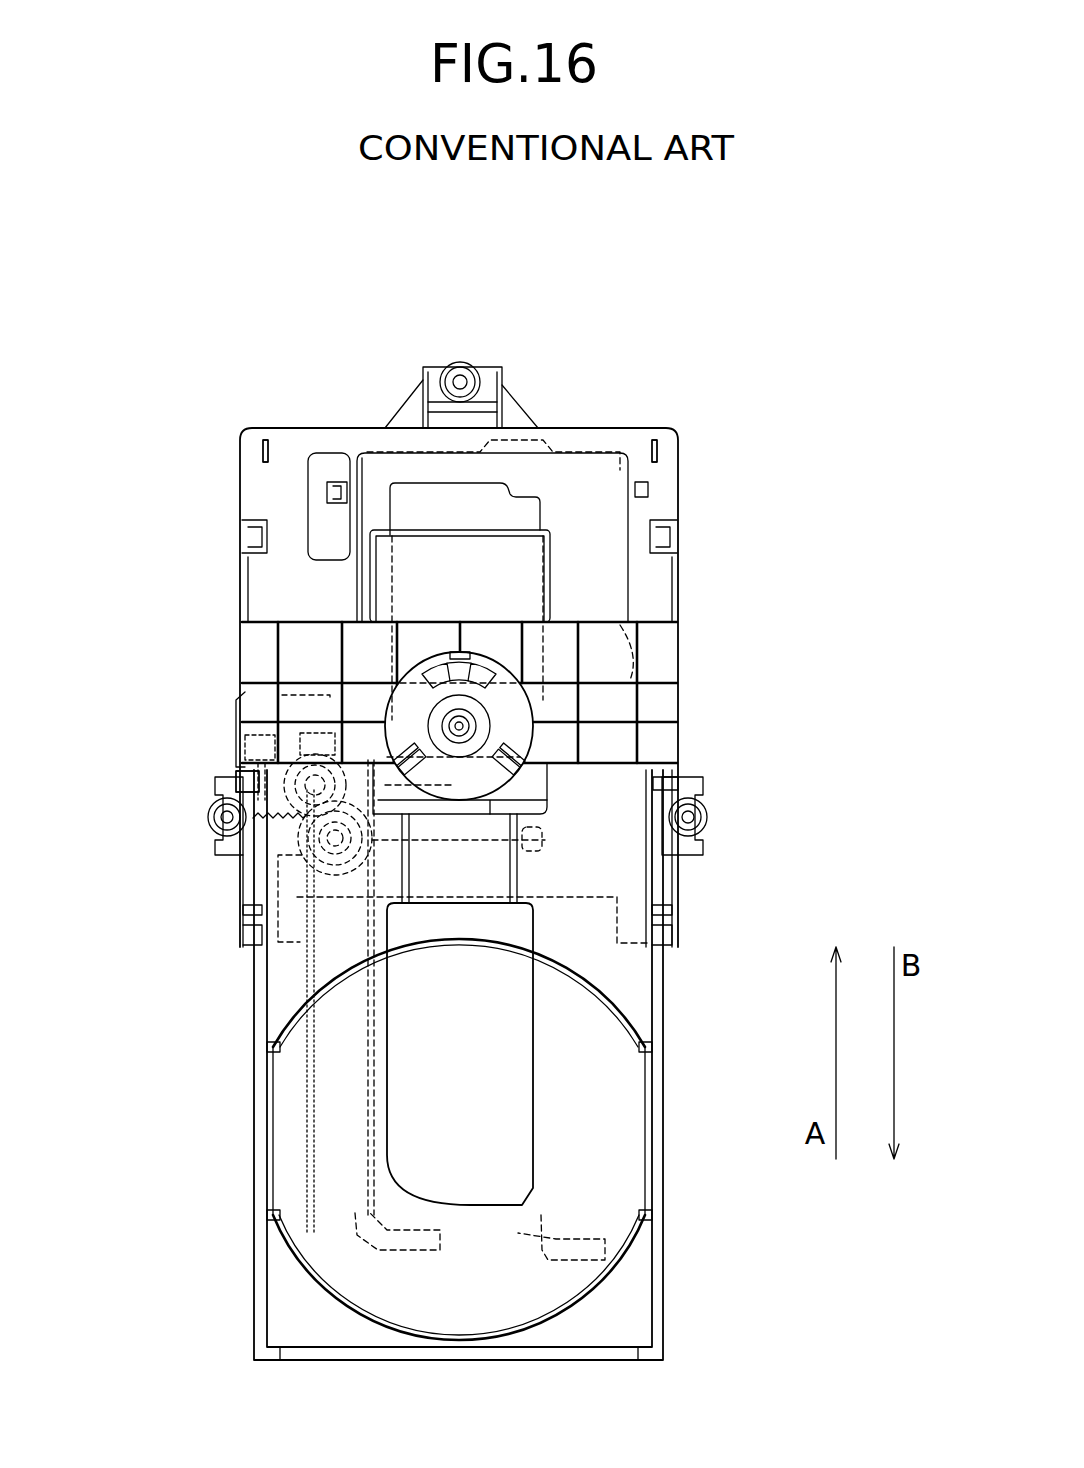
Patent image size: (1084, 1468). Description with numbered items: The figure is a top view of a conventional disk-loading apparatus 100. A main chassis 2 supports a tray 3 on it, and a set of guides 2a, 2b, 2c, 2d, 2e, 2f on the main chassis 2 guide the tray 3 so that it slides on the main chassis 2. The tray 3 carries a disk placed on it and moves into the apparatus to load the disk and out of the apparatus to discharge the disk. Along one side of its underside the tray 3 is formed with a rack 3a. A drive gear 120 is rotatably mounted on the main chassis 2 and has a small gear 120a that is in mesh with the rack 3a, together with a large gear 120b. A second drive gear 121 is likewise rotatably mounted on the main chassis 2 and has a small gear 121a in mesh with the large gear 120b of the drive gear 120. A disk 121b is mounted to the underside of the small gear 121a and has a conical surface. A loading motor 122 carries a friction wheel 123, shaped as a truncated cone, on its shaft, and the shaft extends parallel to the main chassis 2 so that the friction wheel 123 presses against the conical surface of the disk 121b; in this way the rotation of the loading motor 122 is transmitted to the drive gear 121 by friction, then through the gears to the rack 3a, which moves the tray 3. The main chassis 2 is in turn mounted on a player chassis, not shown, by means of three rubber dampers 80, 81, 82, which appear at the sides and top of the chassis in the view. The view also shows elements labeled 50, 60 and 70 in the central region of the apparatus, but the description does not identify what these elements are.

The disk-loading apparatus 100 is at (622, 370).
The main chassis 2 is at (670, 470).
The guide 2a is at (249, 949).
The guide 2b is at (232, 778).
The guide 2c is at (262, 453).
The guide 2d is at (675, 925).
The guide 2e is at (680, 777).
The guide 2f is at (657, 443).
The tray 3 is at (632, 986).
The rack 3a is at (307, 1135).
The traverse unit 50 is at (463, 833).
The spindle motor 60 is at (440, 732).
The optical pickup unit 70 is at (543, 467).
The rubber damper 80 is at (709, 816).
The rubber damper 81 is at (458, 370).
The rubber damper 82 is at (207, 817).
The drive gear 120 is at (300, 877).
The small gear 120a is at (398, 900).
The large gear 120b is at (299, 846).
The drive gear 121 is at (238, 767).
The small gear 121a is at (213, 828).
The disk 121b is at (263, 746).
The loading motor 122 is at (306, 706).
The friction wheel 123 is at (274, 717).